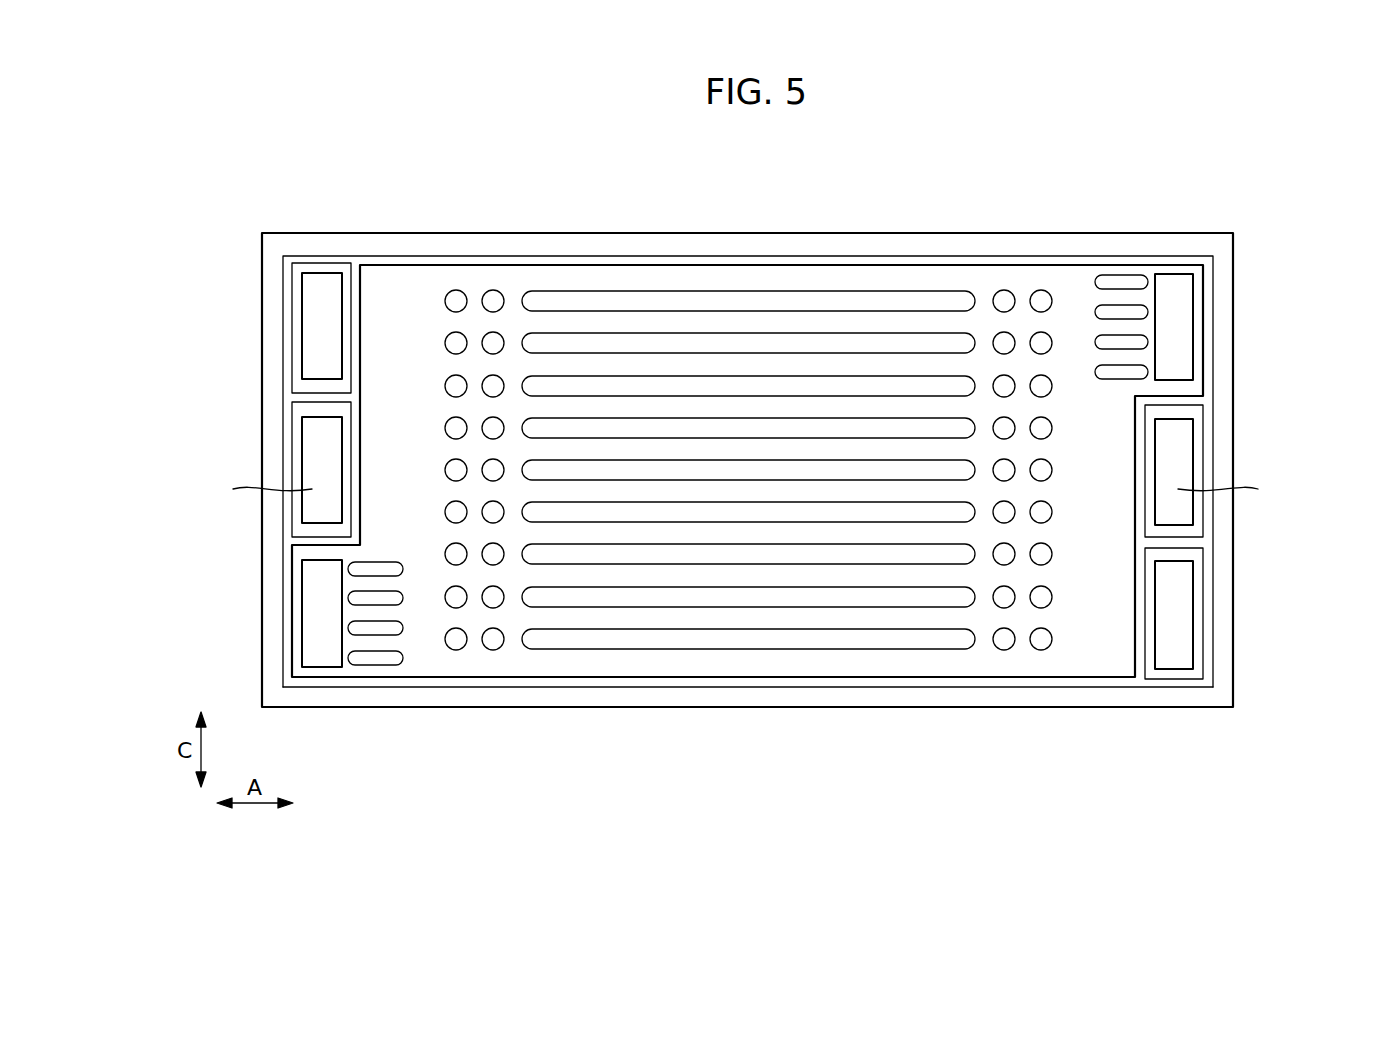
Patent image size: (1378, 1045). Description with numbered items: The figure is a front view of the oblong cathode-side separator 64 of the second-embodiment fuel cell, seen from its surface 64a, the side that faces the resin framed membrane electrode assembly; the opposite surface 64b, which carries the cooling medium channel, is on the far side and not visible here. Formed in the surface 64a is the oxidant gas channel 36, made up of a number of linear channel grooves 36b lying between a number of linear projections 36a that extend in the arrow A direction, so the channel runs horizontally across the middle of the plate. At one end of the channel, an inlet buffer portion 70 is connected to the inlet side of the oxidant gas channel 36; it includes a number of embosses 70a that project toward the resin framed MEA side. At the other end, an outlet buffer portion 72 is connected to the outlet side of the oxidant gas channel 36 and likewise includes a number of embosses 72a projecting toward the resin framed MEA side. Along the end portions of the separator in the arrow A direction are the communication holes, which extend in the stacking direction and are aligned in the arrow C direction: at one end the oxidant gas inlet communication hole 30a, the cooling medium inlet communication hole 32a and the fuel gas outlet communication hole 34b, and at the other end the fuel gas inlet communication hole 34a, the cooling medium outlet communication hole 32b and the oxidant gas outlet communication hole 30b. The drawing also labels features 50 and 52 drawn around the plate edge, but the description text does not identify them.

The cathode-side separator 64 is at (864, 139).
The surface of the cathode-side separator 64a is at (725, 692).
The surface of the cathode-side separator 64b is at (787, 690).
The outer seal 50 is at (968, 258).
The inner seal 52 is at (913, 262).
The outlet buffer portion 72 is at (435, 625).
The embosses 72a is at (456, 298).
The oxidant gas channel 36 is at (760, 335).
The linear projections 36a is at (612, 343).
The linear channel grooves 36b is at (683, 365).
The inlet buffer portion 70 is at (1062, 317).
The embosses 70a is at (1040, 641).
The oxidant gas inlet communication hole 30a is at (1173, 274).
The oxidant gas outlet communication hole 30b is at (320, 560).
The cooling medium inlet communication hole 32a is at (1173, 419).
The cooling medium outlet communication hole 32b is at (320, 417).
The fuel gas inlet communication hole 34a is at (320, 273).
The fuel gas outlet communication hole 34b is at (1173, 561).